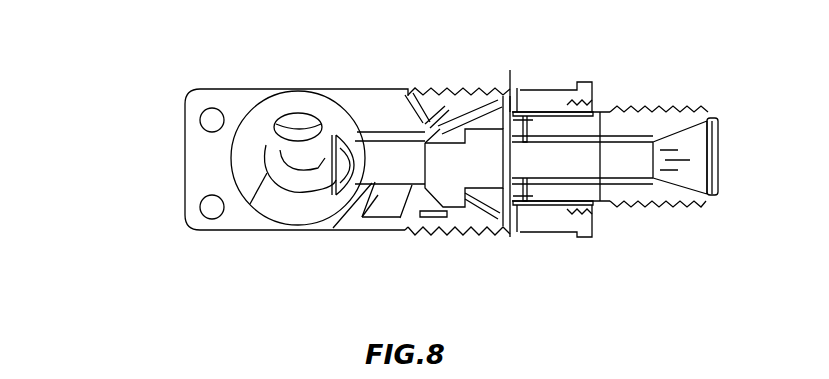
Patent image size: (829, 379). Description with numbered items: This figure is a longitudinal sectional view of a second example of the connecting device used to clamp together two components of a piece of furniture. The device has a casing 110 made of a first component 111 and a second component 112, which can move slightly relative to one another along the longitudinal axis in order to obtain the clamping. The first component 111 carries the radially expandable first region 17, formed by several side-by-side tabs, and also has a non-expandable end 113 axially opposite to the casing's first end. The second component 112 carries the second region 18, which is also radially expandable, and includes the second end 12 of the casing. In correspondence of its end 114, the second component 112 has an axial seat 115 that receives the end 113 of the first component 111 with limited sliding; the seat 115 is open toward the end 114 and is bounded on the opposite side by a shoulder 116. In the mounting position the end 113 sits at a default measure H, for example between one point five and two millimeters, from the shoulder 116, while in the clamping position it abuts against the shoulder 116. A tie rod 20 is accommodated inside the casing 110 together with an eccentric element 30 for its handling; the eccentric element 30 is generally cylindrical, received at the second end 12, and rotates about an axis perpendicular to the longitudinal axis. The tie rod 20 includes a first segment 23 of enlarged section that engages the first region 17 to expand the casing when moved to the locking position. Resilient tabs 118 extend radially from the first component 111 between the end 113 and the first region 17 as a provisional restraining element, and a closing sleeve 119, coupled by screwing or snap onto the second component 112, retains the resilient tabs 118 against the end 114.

The second end 12 is at (183, 134).
The casing 110 is at (347, 82).
The second region 18 is at (472, 84).
The tie rod 20 is at (382, 152).
The eccentric element 30 is at (290, 108).
The first region 17 is at (650, 104).
The first segment 23 is at (722, 178).
The end 114 is at (575, 95).
The resilient tabs 118 is at (597, 107).
The closing sleeve 119 is at (565, 90).
The end 113 is at (522, 234).
The axial seat 115 is at (555, 234).
The shoulder 116 is at (512, 230).
The first component 111 is at (606, 197).
The second component 112 is at (374, 224).
The default measure H is at (510, 70).